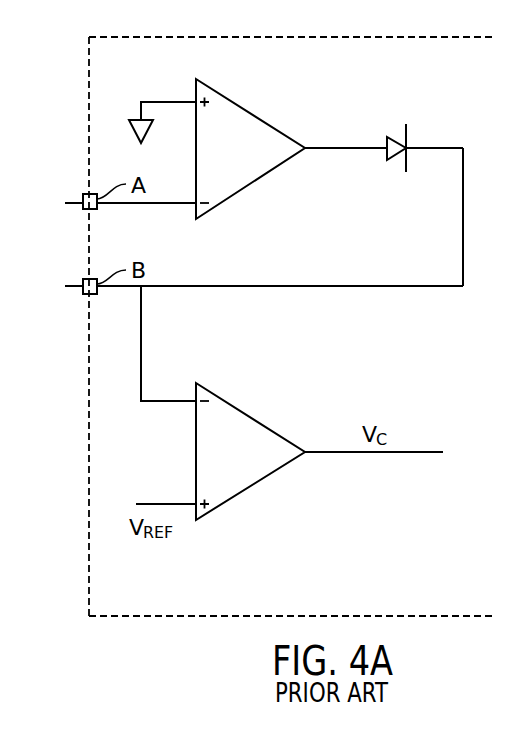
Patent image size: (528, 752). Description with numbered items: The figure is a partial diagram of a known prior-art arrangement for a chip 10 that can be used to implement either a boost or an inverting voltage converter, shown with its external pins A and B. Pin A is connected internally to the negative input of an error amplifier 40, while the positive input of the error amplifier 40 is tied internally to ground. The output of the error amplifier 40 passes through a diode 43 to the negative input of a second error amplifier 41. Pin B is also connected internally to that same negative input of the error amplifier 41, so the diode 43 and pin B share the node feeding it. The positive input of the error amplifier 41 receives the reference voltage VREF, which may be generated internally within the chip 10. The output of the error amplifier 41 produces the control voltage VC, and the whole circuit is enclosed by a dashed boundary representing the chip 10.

The chip 10 is at (389, 527).
The error amplifier 40 is at (257, 115).
The error amplifier 41 is at (240, 405).
The diode 43 is at (398, 160).